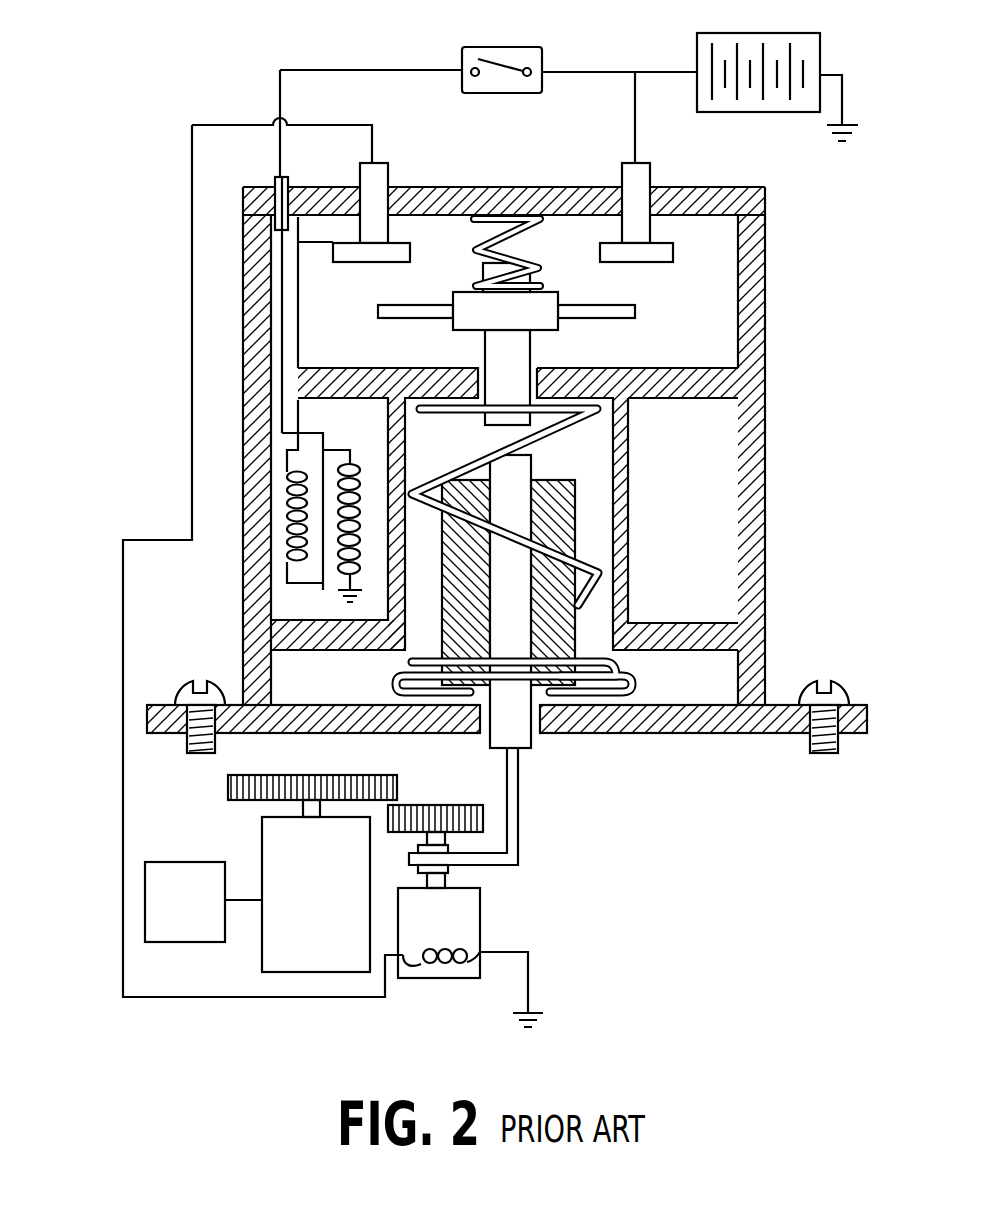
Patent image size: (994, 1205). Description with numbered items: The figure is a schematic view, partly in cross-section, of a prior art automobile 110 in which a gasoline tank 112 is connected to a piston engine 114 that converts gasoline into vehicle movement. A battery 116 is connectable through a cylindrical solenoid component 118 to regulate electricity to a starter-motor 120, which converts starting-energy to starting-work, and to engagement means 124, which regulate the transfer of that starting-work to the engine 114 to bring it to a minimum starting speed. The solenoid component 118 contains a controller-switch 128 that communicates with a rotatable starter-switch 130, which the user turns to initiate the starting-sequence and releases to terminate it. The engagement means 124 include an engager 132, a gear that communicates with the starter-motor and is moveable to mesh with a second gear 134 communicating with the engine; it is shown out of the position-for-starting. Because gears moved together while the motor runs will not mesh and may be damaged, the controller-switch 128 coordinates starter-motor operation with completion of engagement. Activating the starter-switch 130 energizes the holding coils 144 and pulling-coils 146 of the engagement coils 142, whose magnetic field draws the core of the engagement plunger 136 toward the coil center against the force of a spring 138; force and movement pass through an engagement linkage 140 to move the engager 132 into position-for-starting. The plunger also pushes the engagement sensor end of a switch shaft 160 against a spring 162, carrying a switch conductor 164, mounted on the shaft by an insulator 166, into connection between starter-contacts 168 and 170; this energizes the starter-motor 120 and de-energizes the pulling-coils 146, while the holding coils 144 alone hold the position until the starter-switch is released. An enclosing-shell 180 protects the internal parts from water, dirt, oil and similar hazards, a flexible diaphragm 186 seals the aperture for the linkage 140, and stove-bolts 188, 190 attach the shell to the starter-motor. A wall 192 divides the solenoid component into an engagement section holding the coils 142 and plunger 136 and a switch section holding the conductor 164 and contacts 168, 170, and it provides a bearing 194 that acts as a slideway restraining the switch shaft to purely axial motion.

The prior art automobile 110 is at (690, 856).
The gasoline tank 112 is at (188, 870).
The piston engine 114 is at (272, 835).
The battery 116 is at (760, 113).
The solenoid component 118 is at (123, 445).
The starter-motor 120 is at (473, 928).
The engagement means 124 is at (562, 811).
The controller-switch 128 is at (180, 287).
The starter-switch 130 is at (462, 50).
The engager 132 is at (435, 803).
The second gear 134 is at (337, 777).
The engagement plunger 136 is at (517, 475).
The spring 138 is at (597, 567).
The engagement linkage 140 is at (518, 837).
The engagement coils 142 is at (252, 519).
The holding coils 144 is at (340, 572).
The pulling-coils 146 is at (287, 575).
The switch shaft 160 is at (517, 350).
The spring 162 is at (473, 243).
The switch conductor 164 is at (590, 307).
The insulator 166 is at (467, 318).
The starter-contact 168 is at (393, 257).
The starter-contact 170 is at (637, 258).
The enclosing-shell 180 is at (544, 446).
The flexible diaphragm 186 is at (600, 702).
The stove-bolt 188 is at (210, 750).
The stove-bolt 190 is at (809, 742).
The wall 192 is at (695, 373).
The bearing 194 is at (540, 380).